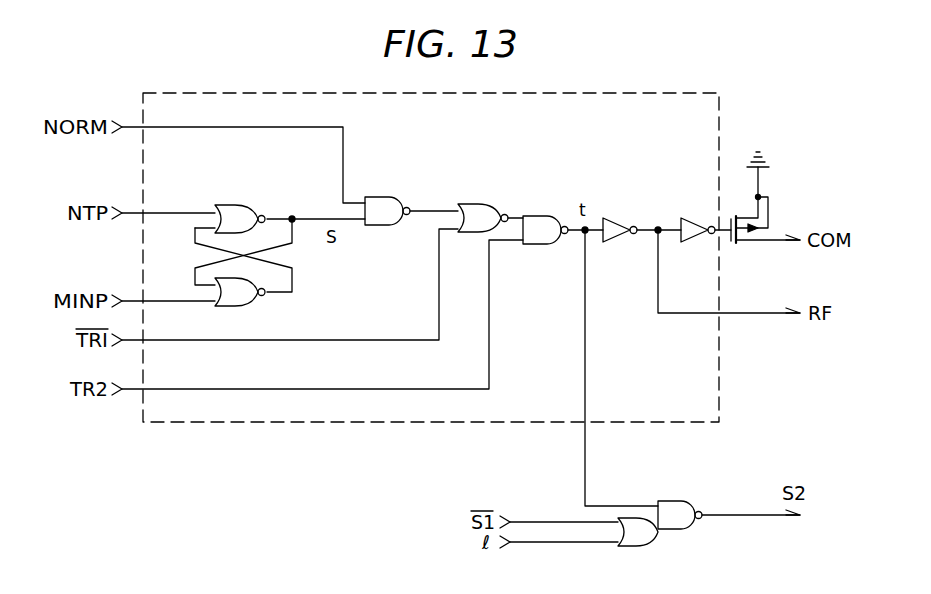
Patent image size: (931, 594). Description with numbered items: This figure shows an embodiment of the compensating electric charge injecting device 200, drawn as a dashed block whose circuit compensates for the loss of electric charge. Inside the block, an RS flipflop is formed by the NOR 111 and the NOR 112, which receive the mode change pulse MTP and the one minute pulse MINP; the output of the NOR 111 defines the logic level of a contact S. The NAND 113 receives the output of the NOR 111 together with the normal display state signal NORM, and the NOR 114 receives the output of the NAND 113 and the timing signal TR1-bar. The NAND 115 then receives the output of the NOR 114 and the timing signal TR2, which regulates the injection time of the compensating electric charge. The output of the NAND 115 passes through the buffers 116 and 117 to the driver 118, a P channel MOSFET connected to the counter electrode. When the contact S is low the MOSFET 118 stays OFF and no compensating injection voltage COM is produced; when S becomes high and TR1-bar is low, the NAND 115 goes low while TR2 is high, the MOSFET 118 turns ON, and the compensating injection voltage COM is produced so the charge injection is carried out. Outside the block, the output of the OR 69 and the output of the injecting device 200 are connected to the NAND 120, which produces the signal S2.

The NOR 111 is at (269, 188).
The NOR 112 is at (241, 300).
The NAND 113 is at (397, 187).
The NOR 114 is at (484, 212).
The NAND 115 is at (545, 221).
The buffer 116 is at (619, 224).
The buffer 117 is at (687, 239).
The driver 118 is at (740, 216).
The NAND 120 is at (687, 504).
The OR 69 is at (635, 538).
The compensating electric charge injecting device 200 is at (418, 408).